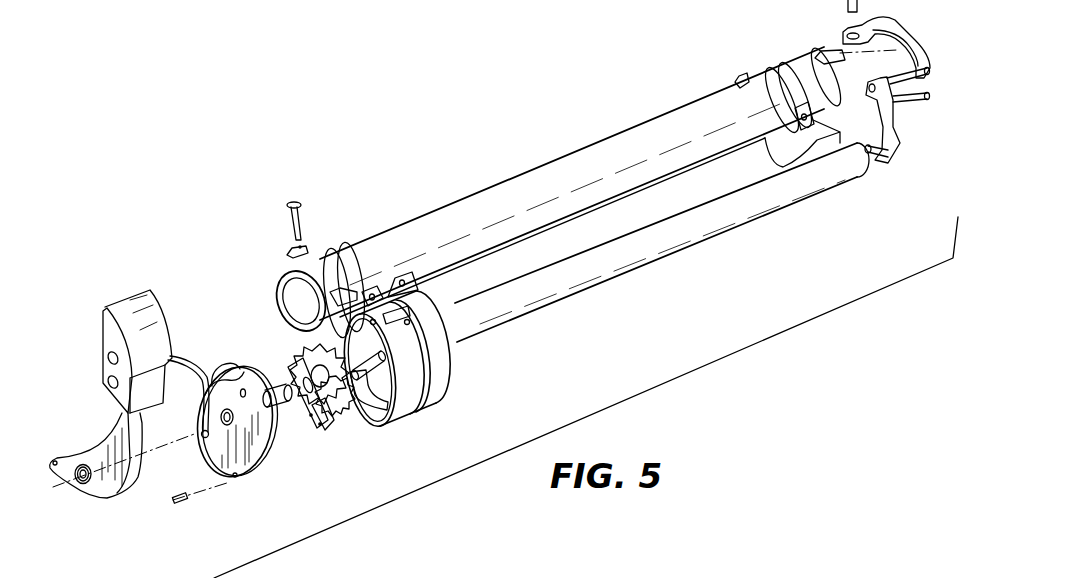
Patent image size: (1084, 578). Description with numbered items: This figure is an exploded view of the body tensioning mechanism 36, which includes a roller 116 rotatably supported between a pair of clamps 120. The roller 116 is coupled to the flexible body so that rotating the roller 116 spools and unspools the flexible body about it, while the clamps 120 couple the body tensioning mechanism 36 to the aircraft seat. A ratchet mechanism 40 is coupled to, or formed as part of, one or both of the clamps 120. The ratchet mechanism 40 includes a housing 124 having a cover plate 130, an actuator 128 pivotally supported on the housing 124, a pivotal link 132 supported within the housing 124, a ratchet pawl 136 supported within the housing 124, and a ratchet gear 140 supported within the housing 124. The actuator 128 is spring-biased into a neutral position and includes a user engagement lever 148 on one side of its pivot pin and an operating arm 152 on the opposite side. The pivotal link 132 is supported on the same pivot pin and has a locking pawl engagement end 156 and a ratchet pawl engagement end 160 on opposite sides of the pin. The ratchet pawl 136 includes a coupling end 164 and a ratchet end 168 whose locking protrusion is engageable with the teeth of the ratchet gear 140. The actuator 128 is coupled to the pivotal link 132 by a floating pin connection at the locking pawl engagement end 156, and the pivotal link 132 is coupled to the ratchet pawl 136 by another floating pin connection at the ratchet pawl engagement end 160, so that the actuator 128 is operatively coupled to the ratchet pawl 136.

The body tensioning mechanism 36 is at (217, 530).
The ratchet mechanism 40 is at (107, 512).
The roller 116 is at (652, 247).
The clamps 120 is at (357, 270).
The housing 124 is at (444, 383).
The actuator 128 is at (104, 318).
The cover plate 130 is at (254, 468).
The pivotal link 132 is at (278, 372).
The ratchet pawl 136 is at (372, 424).
The ratchet gear 140 is at (341, 366).
The user engagement lever 148 is at (158, 320).
The operating arm 152 is at (52, 460).
The locking pawl engagement end 156 is at (268, 377).
The ratchet pawl engagement end 160 is at (312, 432).
The coupling end 164 is at (333, 422).
The ratchet end 168 is at (283, 360).